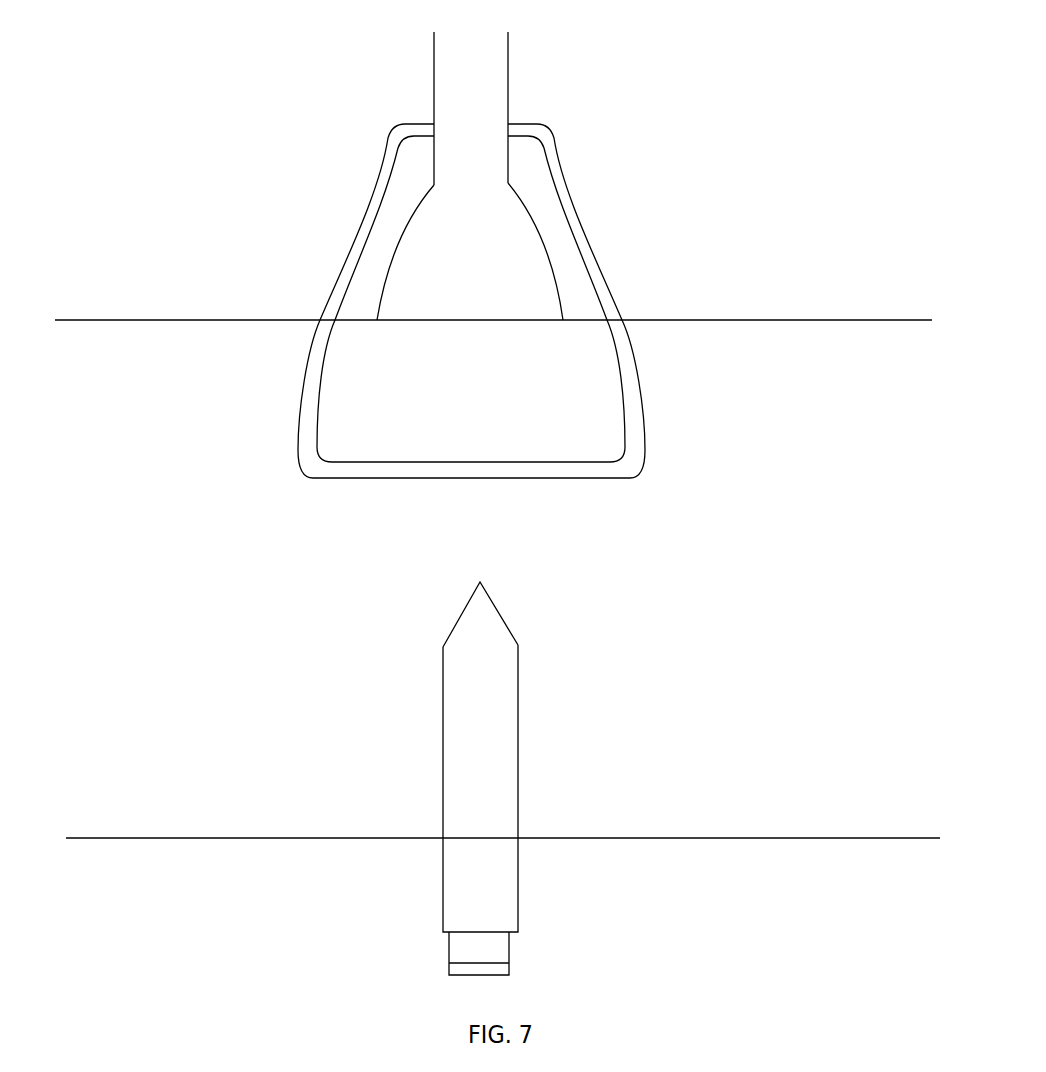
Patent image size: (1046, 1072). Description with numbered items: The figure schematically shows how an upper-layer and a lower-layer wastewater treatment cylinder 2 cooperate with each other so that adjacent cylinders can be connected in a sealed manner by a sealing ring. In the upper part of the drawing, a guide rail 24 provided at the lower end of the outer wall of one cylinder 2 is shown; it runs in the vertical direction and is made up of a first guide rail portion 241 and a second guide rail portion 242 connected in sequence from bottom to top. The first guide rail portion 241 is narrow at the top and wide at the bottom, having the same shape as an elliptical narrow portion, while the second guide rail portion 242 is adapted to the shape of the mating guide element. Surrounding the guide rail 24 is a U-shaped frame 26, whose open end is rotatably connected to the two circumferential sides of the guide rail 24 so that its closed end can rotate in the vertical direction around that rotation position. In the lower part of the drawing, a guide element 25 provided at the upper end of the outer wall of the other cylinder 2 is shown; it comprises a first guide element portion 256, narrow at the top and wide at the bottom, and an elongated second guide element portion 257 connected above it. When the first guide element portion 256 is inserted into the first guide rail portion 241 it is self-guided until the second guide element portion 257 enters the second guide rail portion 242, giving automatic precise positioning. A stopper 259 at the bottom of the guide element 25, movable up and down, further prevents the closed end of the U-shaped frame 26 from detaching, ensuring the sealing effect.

The wastewater treatment cylinder 2 is at (798, 320).
The guide rail 24 is at (470, 244).
The first guide rail portion 241 is at (408, 278).
The second guide rail portion 242 is at (450, 103).
The U-shaped frame 26 is at (602, 267).
The guide element 25 is at (471, 772).
The first guide element portion 256 is at (473, 625).
The second guide element portion 257 is at (453, 792).
The stopper 259 is at (455, 955).